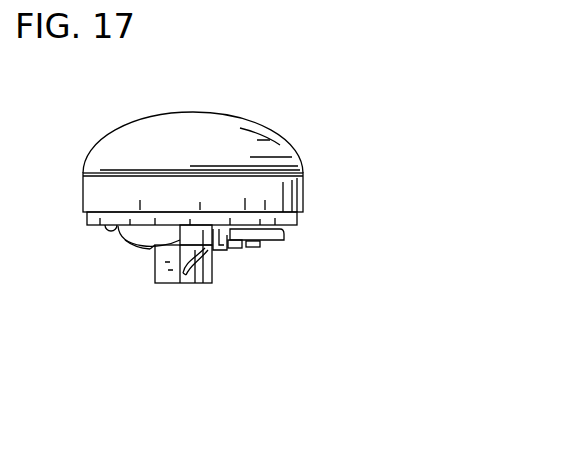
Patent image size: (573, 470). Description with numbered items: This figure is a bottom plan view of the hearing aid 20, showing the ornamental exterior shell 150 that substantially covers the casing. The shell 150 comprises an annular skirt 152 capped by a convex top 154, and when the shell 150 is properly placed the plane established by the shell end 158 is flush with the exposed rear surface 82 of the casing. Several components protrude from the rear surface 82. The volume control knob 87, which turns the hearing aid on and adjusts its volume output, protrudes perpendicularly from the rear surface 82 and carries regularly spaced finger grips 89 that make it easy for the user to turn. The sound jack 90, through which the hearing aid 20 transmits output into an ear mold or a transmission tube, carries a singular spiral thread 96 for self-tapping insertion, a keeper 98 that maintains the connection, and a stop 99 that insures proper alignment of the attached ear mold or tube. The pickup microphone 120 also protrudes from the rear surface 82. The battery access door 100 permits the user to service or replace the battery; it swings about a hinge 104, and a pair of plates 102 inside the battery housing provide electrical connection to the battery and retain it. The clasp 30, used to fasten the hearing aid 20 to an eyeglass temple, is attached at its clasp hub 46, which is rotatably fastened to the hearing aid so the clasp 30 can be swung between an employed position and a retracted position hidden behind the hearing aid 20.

The hearing aid 20 is at (100, 105).
The ornamental exterior shell 150 is at (199, 100).
The convex top 154 is at (266, 130).
The skirt 152 is at (303, 188).
The shell end 158 is at (303, 212).
The rear surface 82 is at (105, 228).
The hinge 104 is at (113, 234).
The battery access door 100 is at (126, 254).
The plates 102 is at (150, 249).
The clasp hub 46 is at (147, 245).
The clasp 30 is at (171, 292).
The sound jack 90 is at (198, 294).
The pickup microphone 120 is at (240, 247).
The spiral thread 96 is at (205, 253).
The keeper 98 is at (210, 238).
The stop 99 is at (230, 243).
The volume control knob 87 is at (273, 249).
The finger grips 89 is at (275, 258).